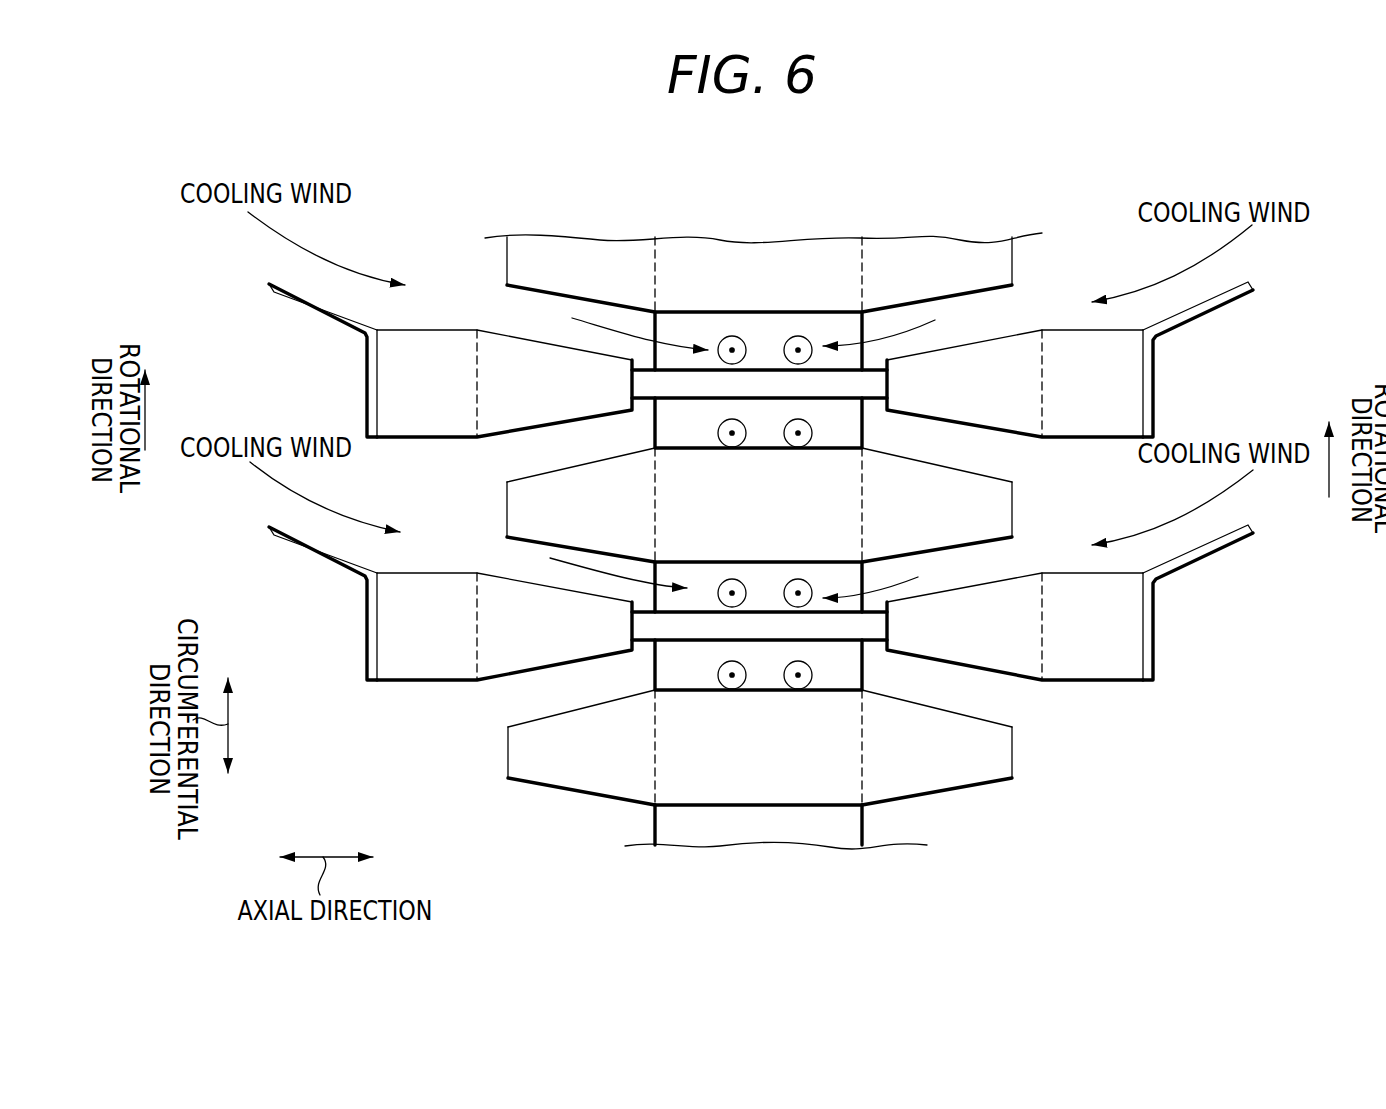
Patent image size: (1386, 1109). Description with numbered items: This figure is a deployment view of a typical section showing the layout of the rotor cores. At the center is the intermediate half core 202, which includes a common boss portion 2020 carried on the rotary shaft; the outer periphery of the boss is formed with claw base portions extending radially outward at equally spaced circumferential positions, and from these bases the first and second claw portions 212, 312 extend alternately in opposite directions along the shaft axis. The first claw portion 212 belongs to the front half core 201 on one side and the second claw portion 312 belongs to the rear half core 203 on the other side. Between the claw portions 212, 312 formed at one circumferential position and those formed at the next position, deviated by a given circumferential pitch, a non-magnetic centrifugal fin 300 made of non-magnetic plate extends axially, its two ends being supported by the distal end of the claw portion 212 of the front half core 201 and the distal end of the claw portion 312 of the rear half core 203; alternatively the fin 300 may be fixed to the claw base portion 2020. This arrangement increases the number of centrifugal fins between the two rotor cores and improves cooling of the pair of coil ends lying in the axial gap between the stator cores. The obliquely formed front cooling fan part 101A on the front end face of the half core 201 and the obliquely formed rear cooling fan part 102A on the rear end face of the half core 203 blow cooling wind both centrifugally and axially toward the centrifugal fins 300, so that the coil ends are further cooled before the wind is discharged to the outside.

The intermediate half core 202 is at (718, 247).
The common boss portion 2020 is at (697, 282).
The non-magnetic centrifugal fin 300 is at (767, 380).
The first claw portion 212 is at (538, 268).
The second claw portion 312 is at (897, 268).
The front half core 201 is at (448, 323).
The rear half core 203 is at (1055, 313).
The first cooling fan blade 101A is at (322, 560).
The second cooling fan blade 102A is at (1215, 555).